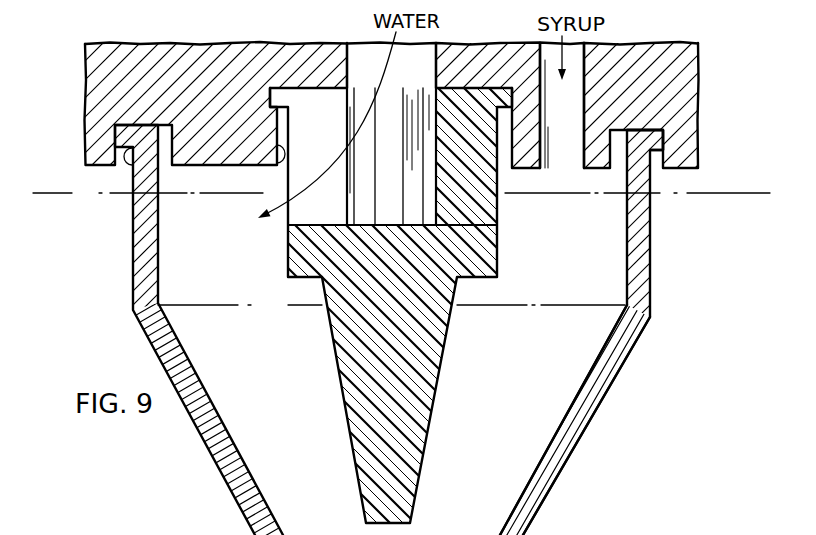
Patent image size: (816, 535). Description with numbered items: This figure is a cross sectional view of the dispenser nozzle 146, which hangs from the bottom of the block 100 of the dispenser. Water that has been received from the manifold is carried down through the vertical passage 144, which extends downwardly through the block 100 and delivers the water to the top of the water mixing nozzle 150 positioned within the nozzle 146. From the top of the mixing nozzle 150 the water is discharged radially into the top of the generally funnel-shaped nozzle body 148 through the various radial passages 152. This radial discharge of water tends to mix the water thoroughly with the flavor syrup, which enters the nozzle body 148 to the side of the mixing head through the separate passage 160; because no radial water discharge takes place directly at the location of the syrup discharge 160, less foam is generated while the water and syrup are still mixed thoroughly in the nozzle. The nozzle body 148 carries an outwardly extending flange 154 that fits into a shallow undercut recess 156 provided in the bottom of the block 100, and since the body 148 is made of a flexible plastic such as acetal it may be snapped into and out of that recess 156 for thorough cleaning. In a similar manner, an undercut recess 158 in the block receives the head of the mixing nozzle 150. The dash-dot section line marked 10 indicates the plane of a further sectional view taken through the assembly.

The block 100 is at (97, 90).
The vertical passage 144 is at (363, 55).
The nozzle 146 is at (652, 348).
The funnel-shaped body 148 is at (595, 417).
The water mixing nozzle 150 is at (437, 389).
The radial passages 152 is at (298, 182).
The outwardly extending flange 154 is at (664, 142).
The shallow undercut recess 156 is at (132, 167).
The undercut recess 158 is at (283, 170).
The passage 160 is at (564, 158).
The section line 10- 10 is at (43, 200).